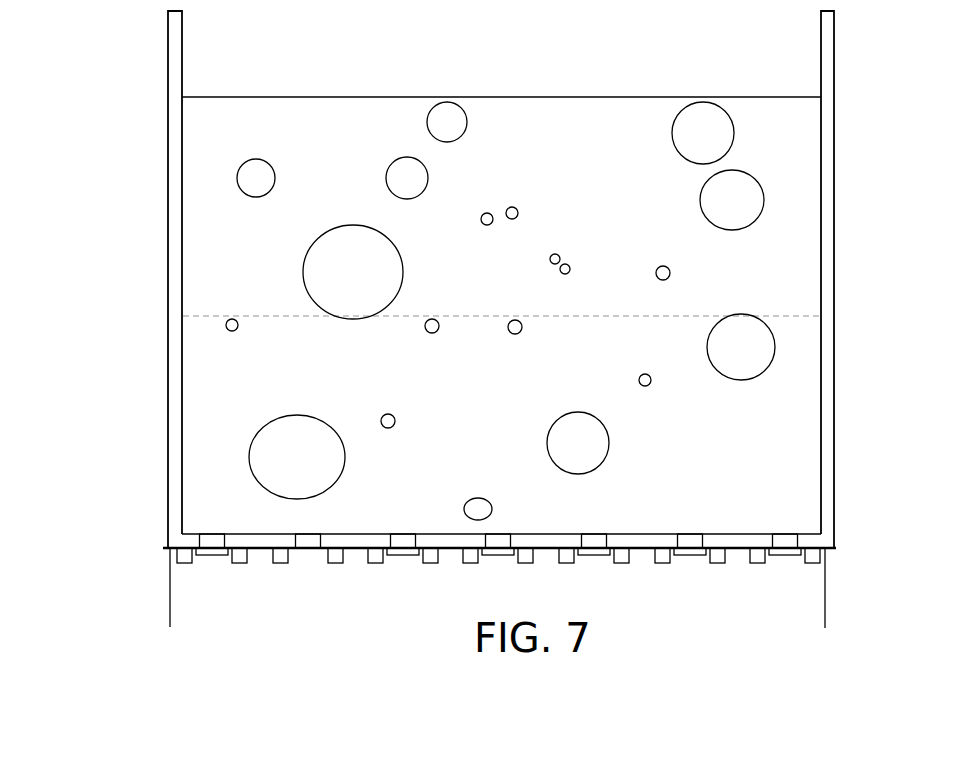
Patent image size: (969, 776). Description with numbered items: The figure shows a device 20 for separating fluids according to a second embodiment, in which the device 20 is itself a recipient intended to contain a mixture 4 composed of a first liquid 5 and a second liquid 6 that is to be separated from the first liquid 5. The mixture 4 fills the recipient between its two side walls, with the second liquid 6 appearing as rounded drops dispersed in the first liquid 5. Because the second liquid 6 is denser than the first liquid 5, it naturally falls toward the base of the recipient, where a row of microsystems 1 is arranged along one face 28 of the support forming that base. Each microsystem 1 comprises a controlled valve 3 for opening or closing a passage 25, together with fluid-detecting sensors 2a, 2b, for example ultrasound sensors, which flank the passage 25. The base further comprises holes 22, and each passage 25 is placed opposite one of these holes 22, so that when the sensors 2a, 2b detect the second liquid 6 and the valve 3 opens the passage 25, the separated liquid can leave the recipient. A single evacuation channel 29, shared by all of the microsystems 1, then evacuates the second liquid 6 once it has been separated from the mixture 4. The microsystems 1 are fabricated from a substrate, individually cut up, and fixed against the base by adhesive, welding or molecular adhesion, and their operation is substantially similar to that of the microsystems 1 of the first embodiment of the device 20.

The microsystem 1 is at (207, 628).
The sensor 2a is at (185, 562).
The sensor 2b is at (238, 561).
The valve 3 is at (227, 544).
The mixture 4 is at (567, 118).
The first liquid 5 is at (793, 253).
The second liquid 6 is at (703, 197).
The device 20 is at (103, 570).
The hole 22 is at (210, 542).
The passage 25 is at (208, 553).
The face 28 is at (261, 553).
The evacuation channel 29 is at (172, 613).